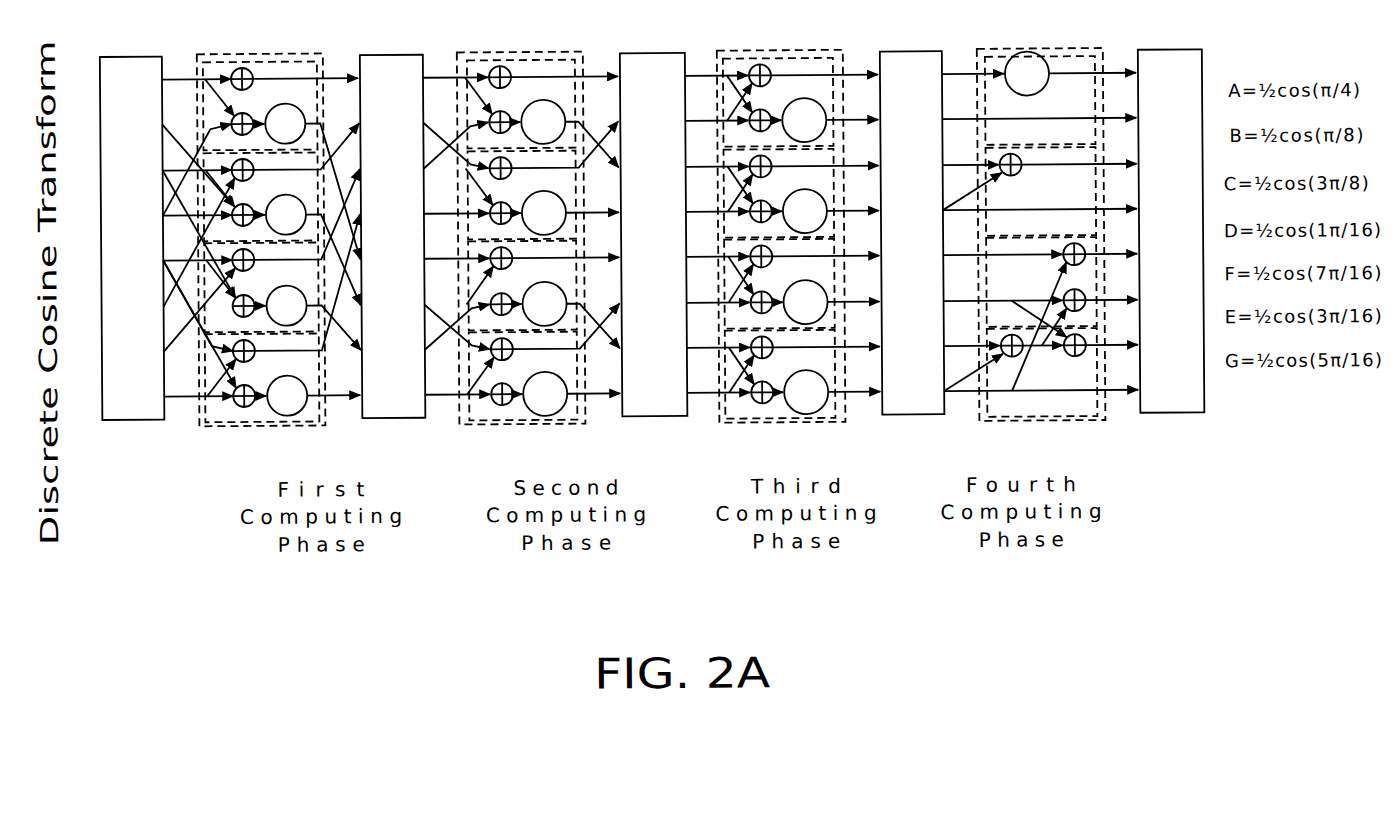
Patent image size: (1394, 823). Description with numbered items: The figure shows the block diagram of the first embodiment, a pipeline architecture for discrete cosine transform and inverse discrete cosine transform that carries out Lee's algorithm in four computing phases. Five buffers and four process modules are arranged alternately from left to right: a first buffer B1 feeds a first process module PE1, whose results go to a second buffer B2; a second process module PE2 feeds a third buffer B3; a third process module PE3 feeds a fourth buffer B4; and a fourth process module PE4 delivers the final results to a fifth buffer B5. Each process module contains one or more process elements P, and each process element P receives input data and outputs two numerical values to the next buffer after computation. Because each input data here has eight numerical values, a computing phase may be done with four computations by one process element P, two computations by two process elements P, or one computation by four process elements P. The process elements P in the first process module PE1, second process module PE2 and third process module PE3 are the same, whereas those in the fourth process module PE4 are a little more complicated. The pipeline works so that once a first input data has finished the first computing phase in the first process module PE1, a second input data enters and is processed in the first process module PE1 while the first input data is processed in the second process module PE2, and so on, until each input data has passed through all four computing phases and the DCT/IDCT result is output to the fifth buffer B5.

The first buffer B1 is at (115, 420).
The first process module PE1 is at (241, 235).
The process element P is at (275, 56).
The second buffer B2 is at (372, 420).
The second process module PE2 is at (457, 413).
The third buffer B3 is at (632, 420).
The third process module PE3 is at (717, 413).
The fourth buffer B4 is at (893, 420).
The fourth process module PE4 is at (977, 413).
The fifth buffer B5 is at (1150, 420).